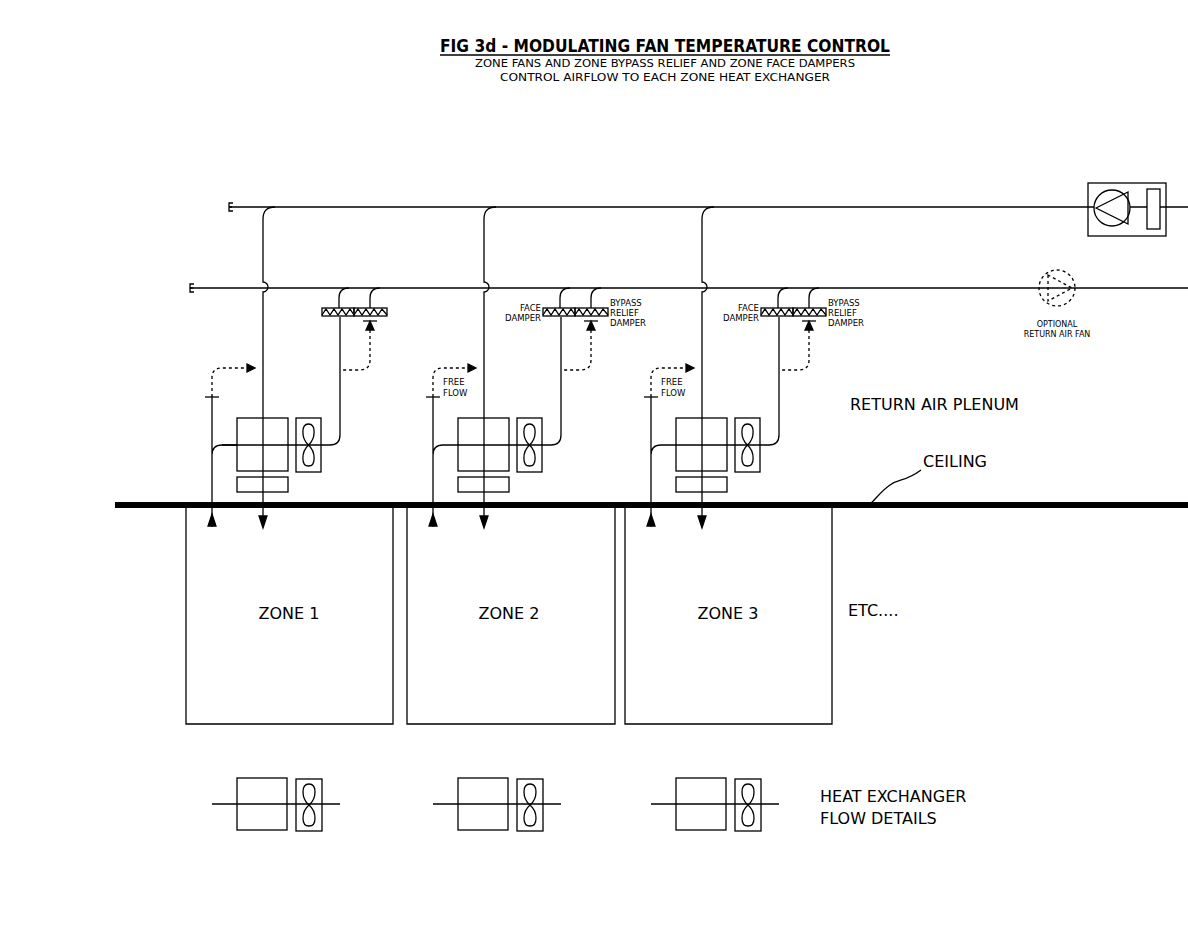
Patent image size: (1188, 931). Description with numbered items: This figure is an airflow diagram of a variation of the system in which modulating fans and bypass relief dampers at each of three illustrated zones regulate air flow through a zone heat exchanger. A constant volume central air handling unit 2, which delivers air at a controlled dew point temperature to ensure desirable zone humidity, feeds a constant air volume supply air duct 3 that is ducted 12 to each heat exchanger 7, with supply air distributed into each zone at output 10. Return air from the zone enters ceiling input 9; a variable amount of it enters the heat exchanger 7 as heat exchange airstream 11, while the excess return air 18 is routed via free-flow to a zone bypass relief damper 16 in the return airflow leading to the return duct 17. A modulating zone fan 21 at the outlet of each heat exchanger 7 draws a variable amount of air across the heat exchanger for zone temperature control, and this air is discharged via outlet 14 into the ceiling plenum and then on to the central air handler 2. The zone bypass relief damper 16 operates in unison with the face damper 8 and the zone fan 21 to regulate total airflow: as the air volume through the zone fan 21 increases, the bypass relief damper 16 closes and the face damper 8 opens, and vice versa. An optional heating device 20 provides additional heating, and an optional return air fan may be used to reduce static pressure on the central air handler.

The central air handling unit 2 is at (1155, 236).
The supply air duct 3 is at (740, 207).
The heat exchanger 7 is at (262, 419).
The face damper 8 is at (319, 328).
The ceiling input 9 is at (235, 551).
The output 10 is at (291, 552).
The heat exchange airstream 11 is at (226, 461).
The ducting 12 is at (294, 367).
The outlet 14 is at (307, 381).
The zone bypass relief damper 16 is at (383, 329).
The return duct 17 is at (845, 288).
The excess return air 18 is at (206, 381).
The heating device 20 is at (313, 478).
The modulating zone fan 21 is at (308, 420).